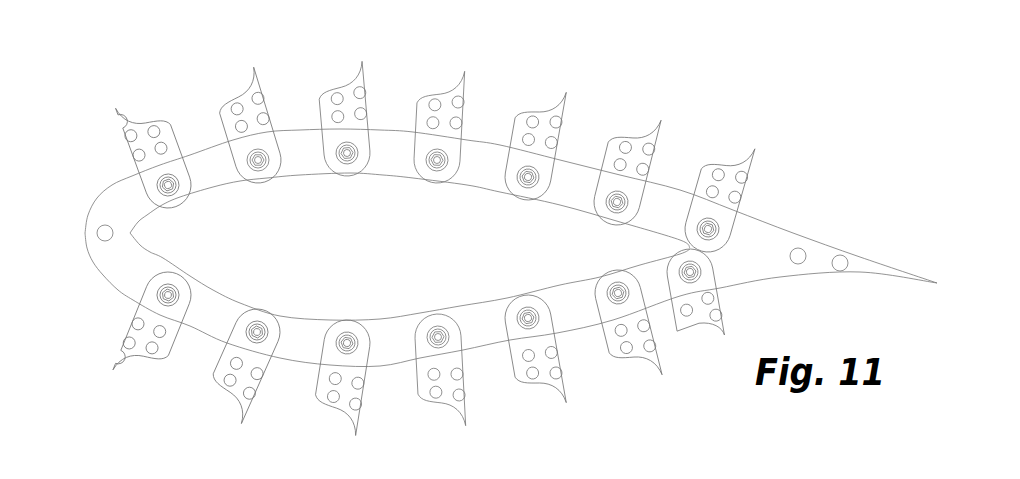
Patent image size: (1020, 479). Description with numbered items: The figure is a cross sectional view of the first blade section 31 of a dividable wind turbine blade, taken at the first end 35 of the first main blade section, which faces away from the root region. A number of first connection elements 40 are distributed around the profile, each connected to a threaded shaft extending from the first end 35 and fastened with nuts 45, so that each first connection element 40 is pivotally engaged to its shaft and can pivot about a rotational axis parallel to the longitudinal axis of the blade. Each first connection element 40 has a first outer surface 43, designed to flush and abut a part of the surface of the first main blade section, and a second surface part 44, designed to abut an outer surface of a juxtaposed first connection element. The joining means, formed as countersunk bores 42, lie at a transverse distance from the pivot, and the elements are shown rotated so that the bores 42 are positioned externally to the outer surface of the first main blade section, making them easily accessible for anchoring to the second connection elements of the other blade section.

The first blade section 31 is at (797, 187).
The first end 35 is at (748, 250).
The first connection element 40 is at (262, 141).
The bores 42 is at (247, 93).
The first outer surface 43 is at (277, 105).
The second surface part 44 is at (248, 83).
The nuts 45 is at (259, 162).